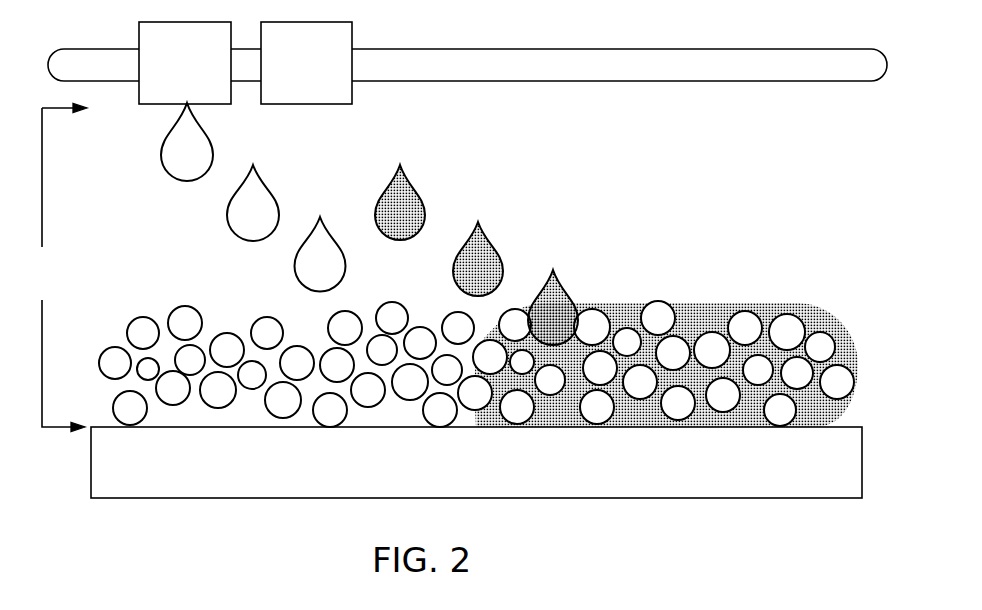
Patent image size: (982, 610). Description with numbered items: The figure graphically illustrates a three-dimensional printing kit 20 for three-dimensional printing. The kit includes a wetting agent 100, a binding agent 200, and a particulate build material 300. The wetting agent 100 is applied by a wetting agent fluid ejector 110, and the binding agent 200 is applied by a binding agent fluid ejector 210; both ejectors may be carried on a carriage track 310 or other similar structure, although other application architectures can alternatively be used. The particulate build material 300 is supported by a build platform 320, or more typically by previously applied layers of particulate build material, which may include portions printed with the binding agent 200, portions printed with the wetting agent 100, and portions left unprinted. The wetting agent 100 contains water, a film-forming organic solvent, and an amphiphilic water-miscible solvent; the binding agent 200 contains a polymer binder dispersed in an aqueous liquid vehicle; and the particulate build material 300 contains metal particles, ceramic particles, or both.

The three-dimensional printing kit 20 is at (27, 287).
The wetting agent 100 is at (283, 170).
The wetting agent fluid ejector 110 is at (165, 77).
The binding agent 200 is at (418, 183).
The binding agent fluid ejector 210 is at (287, 76).
The particulate build material 300 is at (255, 307).
The carriage track 310 is at (448, 76).
The substrate 320 is at (457, 476).